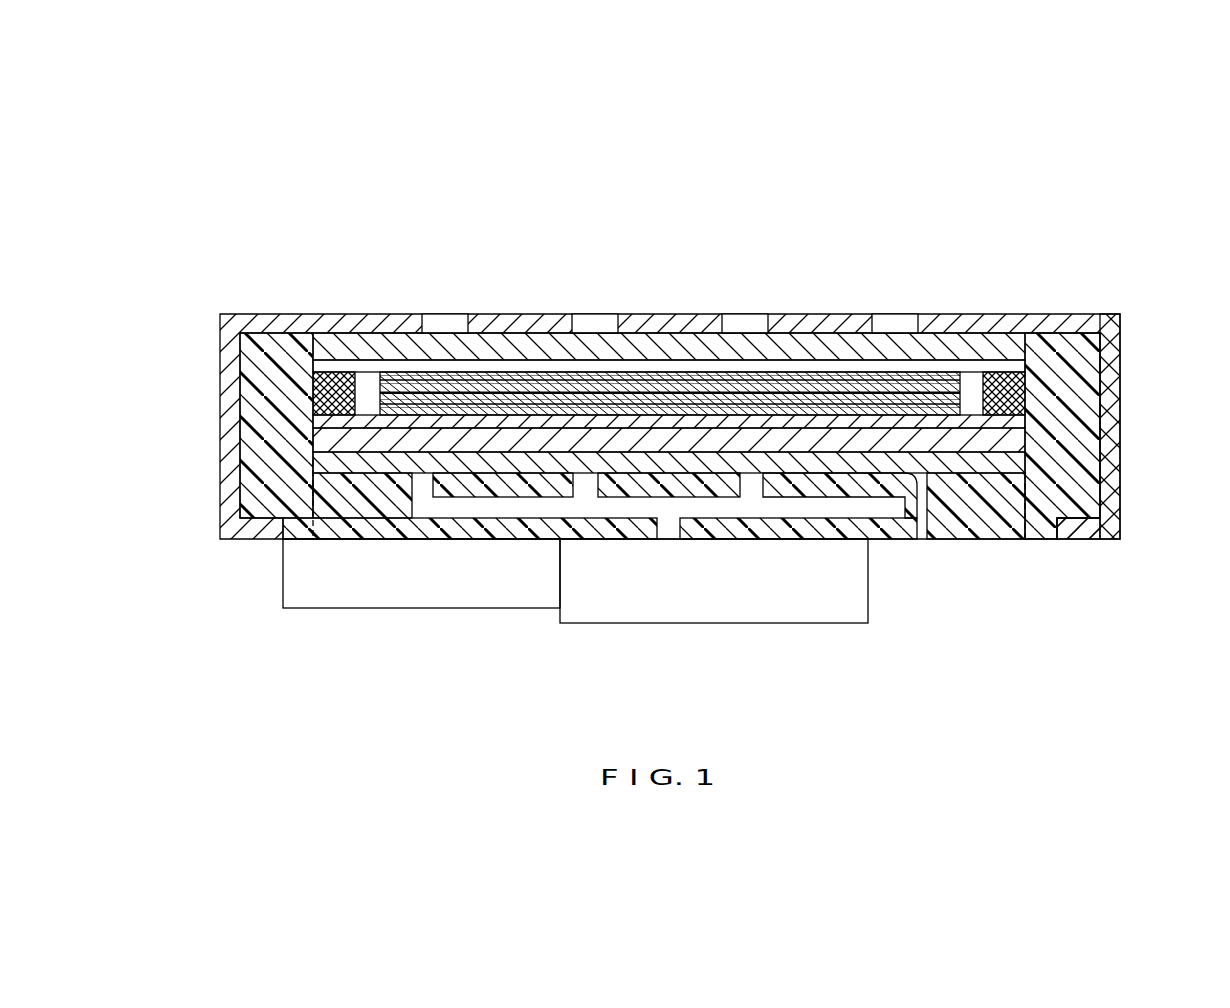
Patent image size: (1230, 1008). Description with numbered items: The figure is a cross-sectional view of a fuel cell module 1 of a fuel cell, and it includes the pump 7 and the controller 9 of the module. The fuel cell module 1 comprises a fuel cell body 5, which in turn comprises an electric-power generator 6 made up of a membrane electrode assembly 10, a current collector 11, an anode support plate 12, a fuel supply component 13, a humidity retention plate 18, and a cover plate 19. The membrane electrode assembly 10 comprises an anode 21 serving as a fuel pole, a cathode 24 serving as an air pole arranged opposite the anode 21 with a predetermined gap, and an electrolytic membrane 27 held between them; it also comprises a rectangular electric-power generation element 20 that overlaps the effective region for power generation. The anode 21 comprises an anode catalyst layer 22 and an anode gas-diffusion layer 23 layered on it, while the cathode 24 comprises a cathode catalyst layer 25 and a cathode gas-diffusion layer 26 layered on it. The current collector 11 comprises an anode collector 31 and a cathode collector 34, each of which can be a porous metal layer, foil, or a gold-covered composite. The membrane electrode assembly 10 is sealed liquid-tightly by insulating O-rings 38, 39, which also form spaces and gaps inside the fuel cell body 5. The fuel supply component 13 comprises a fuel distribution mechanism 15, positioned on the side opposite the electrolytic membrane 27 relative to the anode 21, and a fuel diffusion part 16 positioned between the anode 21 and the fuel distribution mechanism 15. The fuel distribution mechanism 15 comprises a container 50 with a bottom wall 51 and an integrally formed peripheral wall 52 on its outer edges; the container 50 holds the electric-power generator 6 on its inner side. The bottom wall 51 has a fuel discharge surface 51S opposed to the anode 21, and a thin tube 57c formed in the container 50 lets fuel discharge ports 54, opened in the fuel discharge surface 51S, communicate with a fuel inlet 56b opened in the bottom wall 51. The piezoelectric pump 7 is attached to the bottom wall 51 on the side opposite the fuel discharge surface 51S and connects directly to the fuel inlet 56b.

The fuel cell module 1 is at (1092, 208).
The fuel cell body 5 is at (254, 550).
The electric-power generator 6 is at (1035, 395).
The pump 7 is at (620, 623).
The controller 9 is at (500, 608).
The membrane electrode assembly 10 is at (536, 365).
The current collector 11 is at (670, 318).
The anode support plate 12 is at (1030, 460).
The fuel supply component 13 is at (470, 587).
The fuel distribution mechanism 15 is at (383, 546).
The fuel diffusion part 16 is at (447, 472).
The humidity retention plate 18 is at (1025, 345).
The cover plate 19 is at (1093, 331).
The electric-power generation element 20 is at (785, 369).
The anode 21 is at (567, 462).
The anode catalyst layer 22 is at (330, 440).
The anode gas-diffusion layer 23 is at (335, 463).
The cathode 24 is at (567, 345).
The cathode catalyst layer 25 is at (400, 348).
The cathode gas-diffusion layer 26 is at (410, 371).
The electrolytic membrane 27 is at (335, 392).
The anode collector 31 is at (584, 402).
The cathode collector 34 is at (628, 366).
The O-ring 38 is at (1025, 440).
The O-ring 39 is at (1025, 378).
The container 50 is at (1044, 501).
The bottom wall 51 is at (1002, 533).
The fuel discharge surface 51S is at (958, 470).
The peripheral wall 52 is at (1043, 533).
The fuel discharge port 54 is at (590, 498).
The fuel inlet 56b is at (665, 541).
The thin tube 57c is at (772, 540).